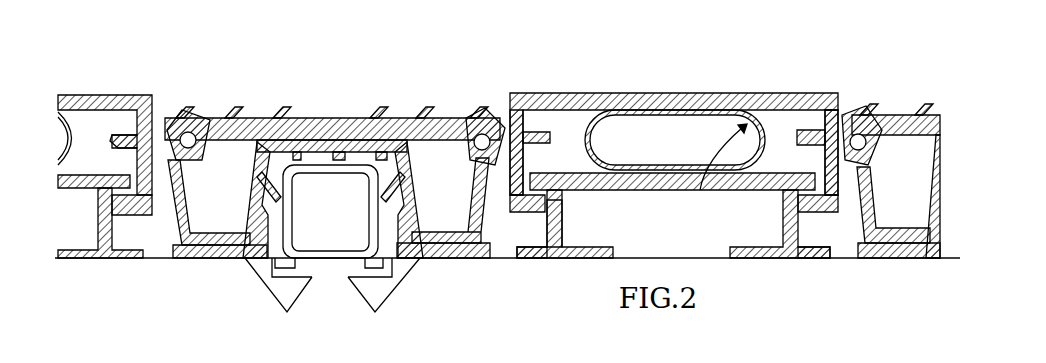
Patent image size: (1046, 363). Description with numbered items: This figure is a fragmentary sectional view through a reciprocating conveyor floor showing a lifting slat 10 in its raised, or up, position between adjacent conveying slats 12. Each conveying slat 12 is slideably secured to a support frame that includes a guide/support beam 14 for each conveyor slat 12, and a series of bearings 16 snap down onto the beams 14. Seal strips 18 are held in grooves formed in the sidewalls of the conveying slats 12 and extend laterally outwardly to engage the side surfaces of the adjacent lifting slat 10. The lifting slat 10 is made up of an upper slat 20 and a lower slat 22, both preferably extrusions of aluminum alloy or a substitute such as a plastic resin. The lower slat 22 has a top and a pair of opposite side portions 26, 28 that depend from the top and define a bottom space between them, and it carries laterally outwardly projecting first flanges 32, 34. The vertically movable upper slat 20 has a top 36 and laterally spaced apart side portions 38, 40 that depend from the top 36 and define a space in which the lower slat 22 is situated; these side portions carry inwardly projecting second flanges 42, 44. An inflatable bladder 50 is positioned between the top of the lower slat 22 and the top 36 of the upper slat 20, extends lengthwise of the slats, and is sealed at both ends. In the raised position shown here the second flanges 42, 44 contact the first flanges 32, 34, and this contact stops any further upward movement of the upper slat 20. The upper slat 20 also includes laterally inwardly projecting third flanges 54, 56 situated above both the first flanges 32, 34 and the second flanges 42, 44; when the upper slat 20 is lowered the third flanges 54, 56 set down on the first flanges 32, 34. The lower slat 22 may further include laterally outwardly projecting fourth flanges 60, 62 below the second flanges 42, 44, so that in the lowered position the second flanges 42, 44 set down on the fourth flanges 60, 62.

The lifting slat 10 is at (140, 80).
The conveying slat 12 is at (346, 111).
The guide/support beam 14 is at (337, 258).
The bearing 16 is at (225, 258).
The seal strip 18 is at (184, 170).
The upper slat 20 is at (107, 93).
The lower slat 22 is at (72, 180).
The side portion 26 is at (573, 212).
The side portion 28 is at (775, 217).
The first flange 32 is at (125, 180).
The first flange 34 is at (810, 173).
The top 36 is at (662, 93).
The side portion 38 is at (497, 135).
The side portion 40 is at (848, 188).
The second flange 42 is at (542, 258).
The second flange 44 is at (126, 212).
The inflatable bladder 50 is at (705, 180).
The third flange 54 is at (543, 128).
The third flange 56 is at (808, 130).
The fourth flange 60 is at (521, 258).
The fourth flange 62 is at (819, 259).